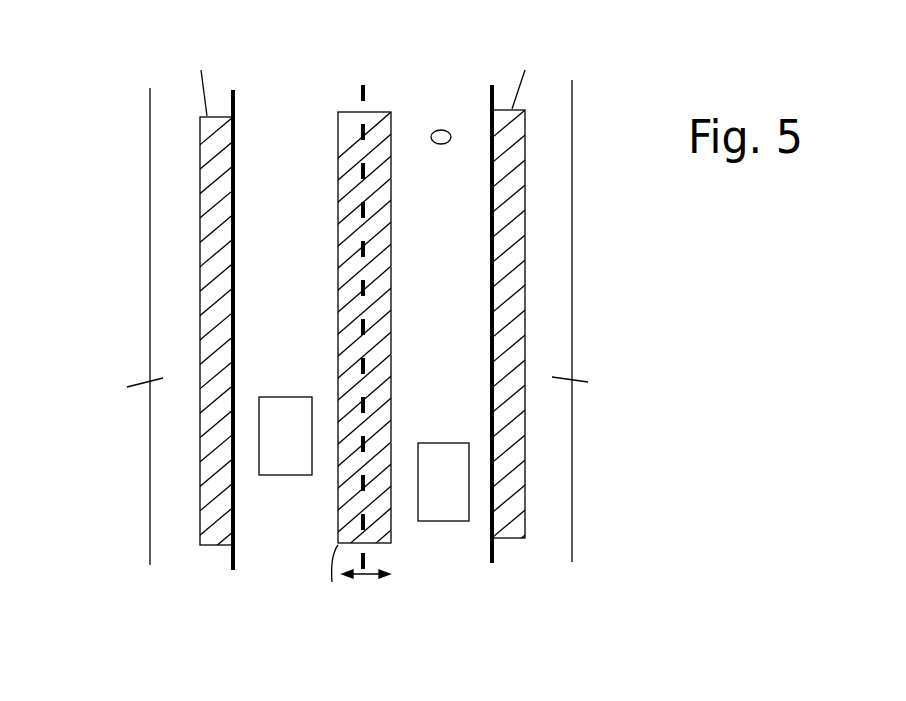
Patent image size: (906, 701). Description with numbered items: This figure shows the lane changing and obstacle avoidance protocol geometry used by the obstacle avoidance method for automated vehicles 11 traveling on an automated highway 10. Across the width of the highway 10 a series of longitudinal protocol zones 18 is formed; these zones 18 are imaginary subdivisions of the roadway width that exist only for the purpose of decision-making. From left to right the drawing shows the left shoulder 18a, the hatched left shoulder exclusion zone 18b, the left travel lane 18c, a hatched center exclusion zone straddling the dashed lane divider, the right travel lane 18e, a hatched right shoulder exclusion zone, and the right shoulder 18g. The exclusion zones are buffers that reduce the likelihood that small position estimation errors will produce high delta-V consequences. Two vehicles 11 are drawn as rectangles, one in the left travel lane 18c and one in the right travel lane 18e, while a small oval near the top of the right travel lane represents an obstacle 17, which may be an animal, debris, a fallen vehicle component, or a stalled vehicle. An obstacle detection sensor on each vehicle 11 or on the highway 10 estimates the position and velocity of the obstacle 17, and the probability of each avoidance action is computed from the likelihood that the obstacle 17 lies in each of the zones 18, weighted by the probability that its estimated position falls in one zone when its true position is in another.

The automated highway 10 is at (716, 283).
The automated vehicle 11 is at (286, 397).
The obstacle 17 is at (434, 130).
The longitudinal protocol zones 18 is at (135, 603).
The left shoulder zone 18a is at (193, 326).
The left shoulder exclusion zone 18b is at (202, 547).
The left travel lane zone 18c is at (303, 326).
The right travel lane zone 18e is at (458, 323).
The right shoulder zone 18g is at (567, 323).